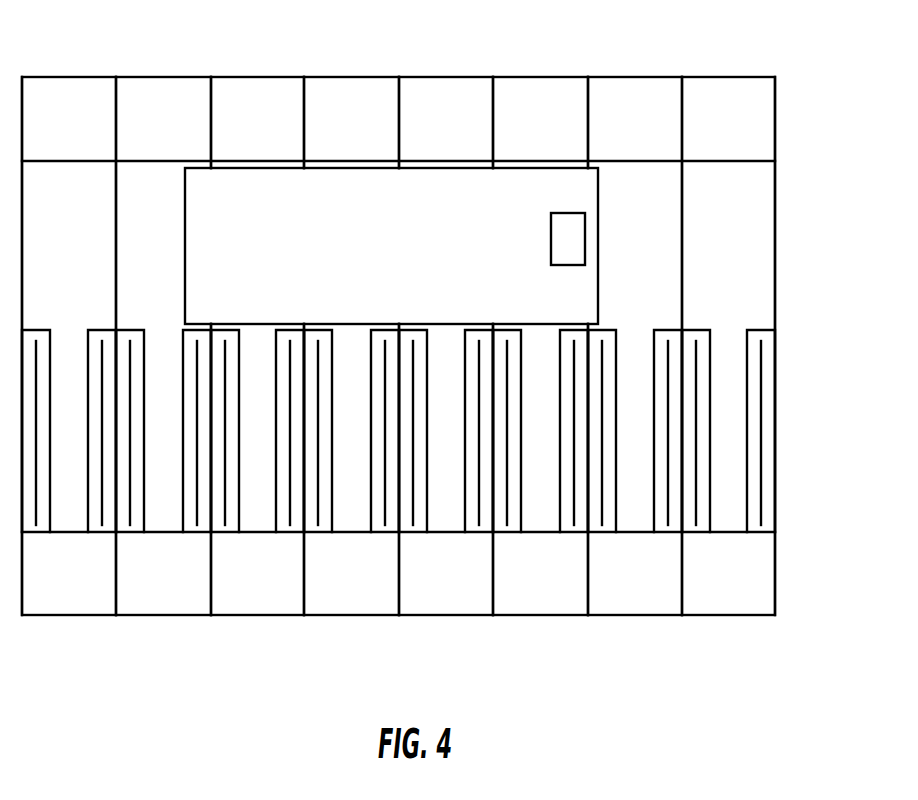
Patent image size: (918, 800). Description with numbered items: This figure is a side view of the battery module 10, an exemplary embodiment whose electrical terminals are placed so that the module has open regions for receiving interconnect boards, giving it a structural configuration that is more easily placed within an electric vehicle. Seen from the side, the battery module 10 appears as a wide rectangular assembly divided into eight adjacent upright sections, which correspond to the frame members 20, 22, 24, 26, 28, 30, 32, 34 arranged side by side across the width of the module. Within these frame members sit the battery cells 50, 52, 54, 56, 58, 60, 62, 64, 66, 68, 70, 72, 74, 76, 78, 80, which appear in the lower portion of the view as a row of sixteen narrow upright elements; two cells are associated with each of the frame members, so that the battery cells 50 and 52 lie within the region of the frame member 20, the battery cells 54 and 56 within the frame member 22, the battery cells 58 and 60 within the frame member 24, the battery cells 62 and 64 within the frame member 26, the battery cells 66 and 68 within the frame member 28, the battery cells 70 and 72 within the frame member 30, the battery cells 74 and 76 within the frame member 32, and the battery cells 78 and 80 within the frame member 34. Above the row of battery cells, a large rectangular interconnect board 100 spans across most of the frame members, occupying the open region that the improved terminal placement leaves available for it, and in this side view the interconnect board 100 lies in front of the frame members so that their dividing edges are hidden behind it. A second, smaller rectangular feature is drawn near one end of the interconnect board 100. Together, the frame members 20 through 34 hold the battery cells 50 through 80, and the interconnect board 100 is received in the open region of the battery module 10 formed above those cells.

The battery module 10 is at (822, 86).
The frame member 20 is at (67, 603).
The frame member 22 is at (165, 603).
The frame member 24 is at (251, 603).
The frame member 26 is at (347, 603).
The frame member 28 is at (446, 603).
The frame member 30 is at (538, 603).
The frame member 32 is at (632, 603).
The frame member 34 is at (737, 603).
The battery cell 50 is at (41, 527).
The battery cell 52 is at (107, 527).
The battery cell 54 is at (135, 527).
The battery cell 56 is at (202, 527).
The battery cell 58 is at (230, 527).
The battery cell 60 is at (295, 527).
The battery cell 62 is at (323, 527).
The battery cell 64 is at (390, 527).
The battery cell 66 is at (418, 527).
The battery cell 68 is at (484, 527).
The battery cell 70 is at (512, 527).
The battery cell 72 is at (579, 527).
The battery cell 74 is at (607, 527).
The battery cell 76 is at (673, 527).
The battery cell 78 is at (701, 527).
The battery cell 80 is at (766, 527).
The interconnect board 100 is at (587, 190).